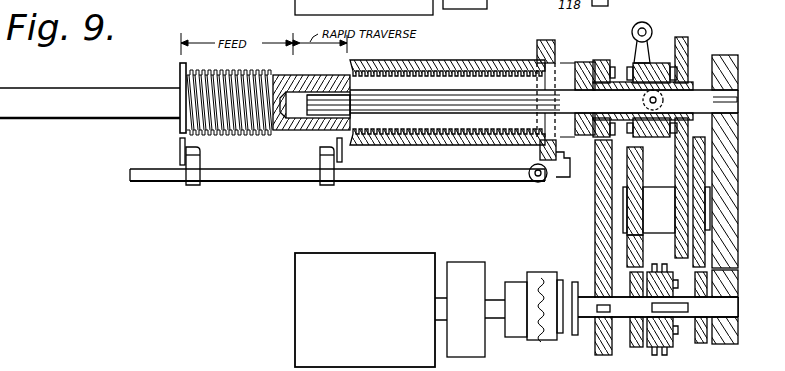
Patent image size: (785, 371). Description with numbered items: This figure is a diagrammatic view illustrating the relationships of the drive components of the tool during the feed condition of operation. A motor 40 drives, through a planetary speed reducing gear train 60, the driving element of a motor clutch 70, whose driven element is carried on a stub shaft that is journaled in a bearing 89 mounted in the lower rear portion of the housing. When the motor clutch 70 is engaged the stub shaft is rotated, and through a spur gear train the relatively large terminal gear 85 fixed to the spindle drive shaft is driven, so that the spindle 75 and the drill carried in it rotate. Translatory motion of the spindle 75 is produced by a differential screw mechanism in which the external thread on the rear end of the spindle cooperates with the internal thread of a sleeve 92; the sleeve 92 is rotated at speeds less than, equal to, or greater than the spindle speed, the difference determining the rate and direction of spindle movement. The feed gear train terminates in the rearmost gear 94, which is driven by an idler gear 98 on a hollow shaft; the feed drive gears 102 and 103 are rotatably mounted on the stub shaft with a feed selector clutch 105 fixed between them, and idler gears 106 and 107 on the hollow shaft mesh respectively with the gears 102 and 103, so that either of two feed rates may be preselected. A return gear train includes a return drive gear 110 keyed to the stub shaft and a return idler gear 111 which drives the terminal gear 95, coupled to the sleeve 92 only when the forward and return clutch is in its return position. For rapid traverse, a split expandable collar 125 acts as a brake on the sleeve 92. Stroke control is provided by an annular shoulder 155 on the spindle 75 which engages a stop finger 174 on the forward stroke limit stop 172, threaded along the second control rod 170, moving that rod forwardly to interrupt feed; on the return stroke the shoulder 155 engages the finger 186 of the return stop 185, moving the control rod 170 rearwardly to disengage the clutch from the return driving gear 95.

The motor 40 is at (294, 335).
The planetary speed reducing gear train 60 is at (470, 282).
The motor clutch 70 is at (533, 273).
The spindle 75 is at (62, 118).
The terminal gear 85 is at (724, 55).
The bearing 89 is at (722, 344).
The sleeve 92 is at (476, 62).
The rearmost gear 94 is at (680, 37).
The terminal gear 95 is at (598, 60).
The idler gear 98 is at (675, 186).
The spur gear 102 is at (700, 345).
The spur gear 103 is at (636, 345).
The feed selector clutch 105 is at (668, 352).
The idler gear 106 is at (706, 133).
The idler gear 107 is at (644, 236).
The return drive gear 110 is at (597, 344).
The return idler gear 111 is at (597, 210).
The collar 125 is at (548, 40).
The annular shoulder 155 is at (181, 73).
The second control rod 170 is at (414, 174).
The forward stroke limit stop 172 is at (188, 186).
The stop finger 174 is at (180, 145).
The return stop 185 is at (328, 184).
The finger 186 is at (342, 150).